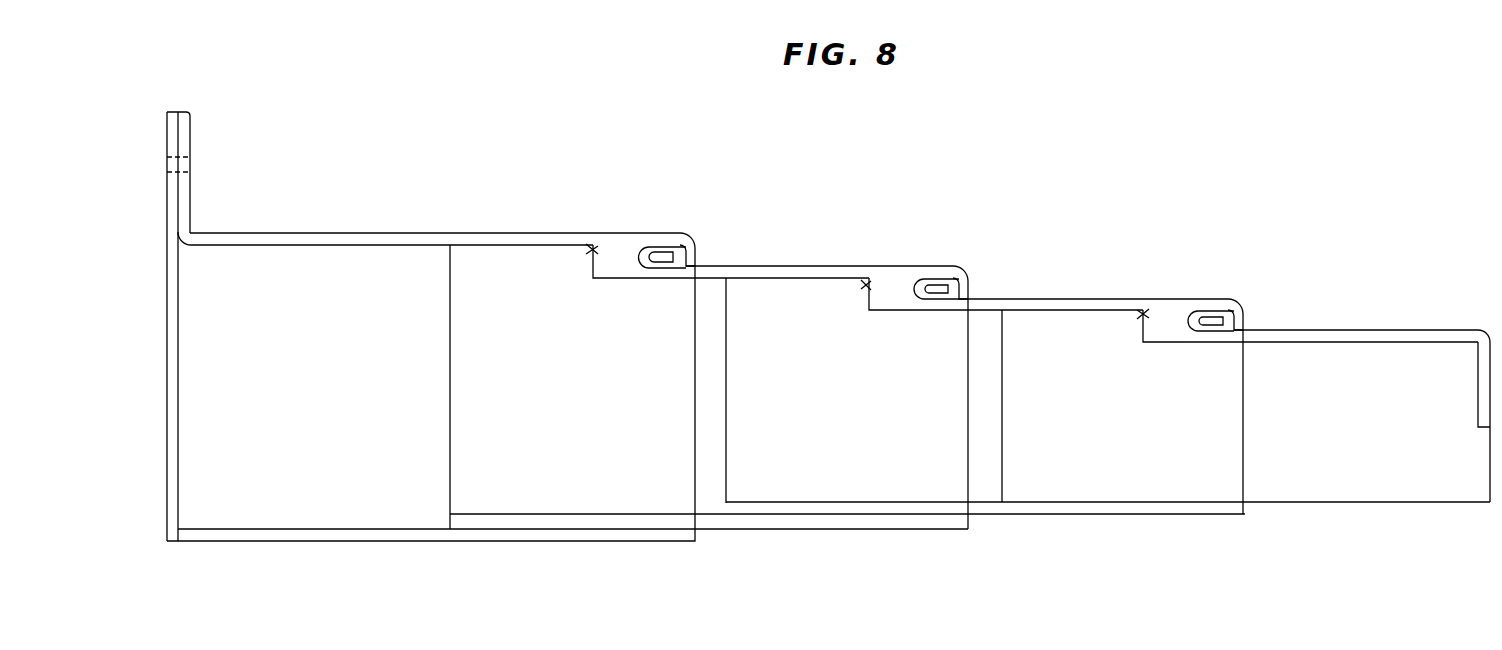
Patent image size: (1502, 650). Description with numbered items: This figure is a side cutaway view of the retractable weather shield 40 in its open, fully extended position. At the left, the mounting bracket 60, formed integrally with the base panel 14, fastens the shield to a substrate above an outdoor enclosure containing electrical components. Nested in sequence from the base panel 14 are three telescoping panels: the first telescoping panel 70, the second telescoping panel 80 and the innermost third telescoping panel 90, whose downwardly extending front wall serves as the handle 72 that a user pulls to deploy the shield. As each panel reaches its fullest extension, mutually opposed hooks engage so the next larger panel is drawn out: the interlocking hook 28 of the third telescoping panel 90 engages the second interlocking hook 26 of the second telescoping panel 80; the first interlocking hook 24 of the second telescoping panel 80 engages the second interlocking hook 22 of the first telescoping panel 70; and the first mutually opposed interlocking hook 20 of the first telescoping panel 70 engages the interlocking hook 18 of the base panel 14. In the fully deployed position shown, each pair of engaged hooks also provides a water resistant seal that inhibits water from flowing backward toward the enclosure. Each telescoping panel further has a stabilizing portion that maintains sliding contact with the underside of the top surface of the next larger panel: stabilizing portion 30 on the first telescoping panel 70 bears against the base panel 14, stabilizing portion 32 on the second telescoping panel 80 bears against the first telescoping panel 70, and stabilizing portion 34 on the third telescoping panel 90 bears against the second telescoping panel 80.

The retractable weather shield 40 is at (491, 104).
The mounting bracket 60 is at (183, 136).
The base panel 14 is at (313, 238).
The stabilizing portion 30 is at (590, 253).
The first mutually opposed interlocking hook 20 is at (664, 252).
The interlocking hook 18 is at (671, 263).
The first telescoping panel 70 is at (764, 270).
The stabilizing portion 32 is at (865, 285).
The first interlocking hook 24 is at (942, 286).
The second interlocking hook 22 is at (945, 299).
The second telescoping panel 80 is at (1070, 304).
The stabilizing portion 34 is at (1142, 313).
The interlocking hook 28 is at (1217, 318).
The second interlocking hook 26 is at (1218, 332).
The third telescoping panel 90 is at (1345, 333).
The handle 72 is at (1478, 388).